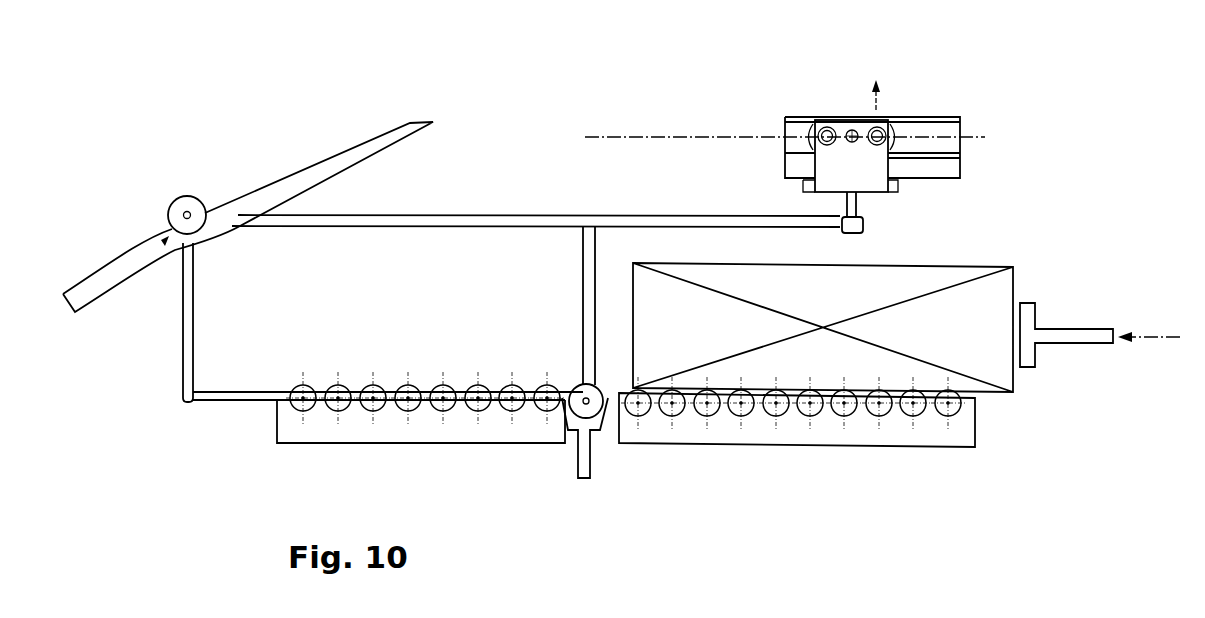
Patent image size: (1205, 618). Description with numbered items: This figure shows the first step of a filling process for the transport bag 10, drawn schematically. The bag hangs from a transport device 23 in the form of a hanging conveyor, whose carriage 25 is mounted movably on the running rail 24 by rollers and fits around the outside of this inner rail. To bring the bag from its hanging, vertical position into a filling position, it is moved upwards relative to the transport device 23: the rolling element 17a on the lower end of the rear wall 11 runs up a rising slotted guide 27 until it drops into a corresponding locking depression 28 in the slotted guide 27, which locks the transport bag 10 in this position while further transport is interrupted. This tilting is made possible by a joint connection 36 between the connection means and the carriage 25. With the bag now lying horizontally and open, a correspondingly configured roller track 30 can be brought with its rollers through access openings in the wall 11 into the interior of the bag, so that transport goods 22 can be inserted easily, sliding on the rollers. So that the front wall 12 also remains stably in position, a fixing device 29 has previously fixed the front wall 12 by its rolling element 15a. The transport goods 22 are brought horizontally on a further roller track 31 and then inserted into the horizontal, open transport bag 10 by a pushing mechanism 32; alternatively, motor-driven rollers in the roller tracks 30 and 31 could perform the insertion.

The transport bag 10 is at (292, 333).
The rear wall 11 is at (447, 216).
The front wall 12 is at (254, 395).
The rolling element 15a is at (591, 408).
The rolling element 17a is at (191, 212).
The transport goods 22 is at (979, 308).
The transport device 23 is at (799, 109).
The running rail 24 is at (931, 145).
The carriage 25 is at (829, 168).
The slotted guide 27 is at (323, 178).
The locking depression 28 is at (165, 240).
The fixing device 29 is at (584, 465).
The roller track 30 is at (454, 434).
The roller track 31 is at (761, 434).
The pushing mechanism 32 is at (1064, 338).
The joint connection 36 is at (880, 228).